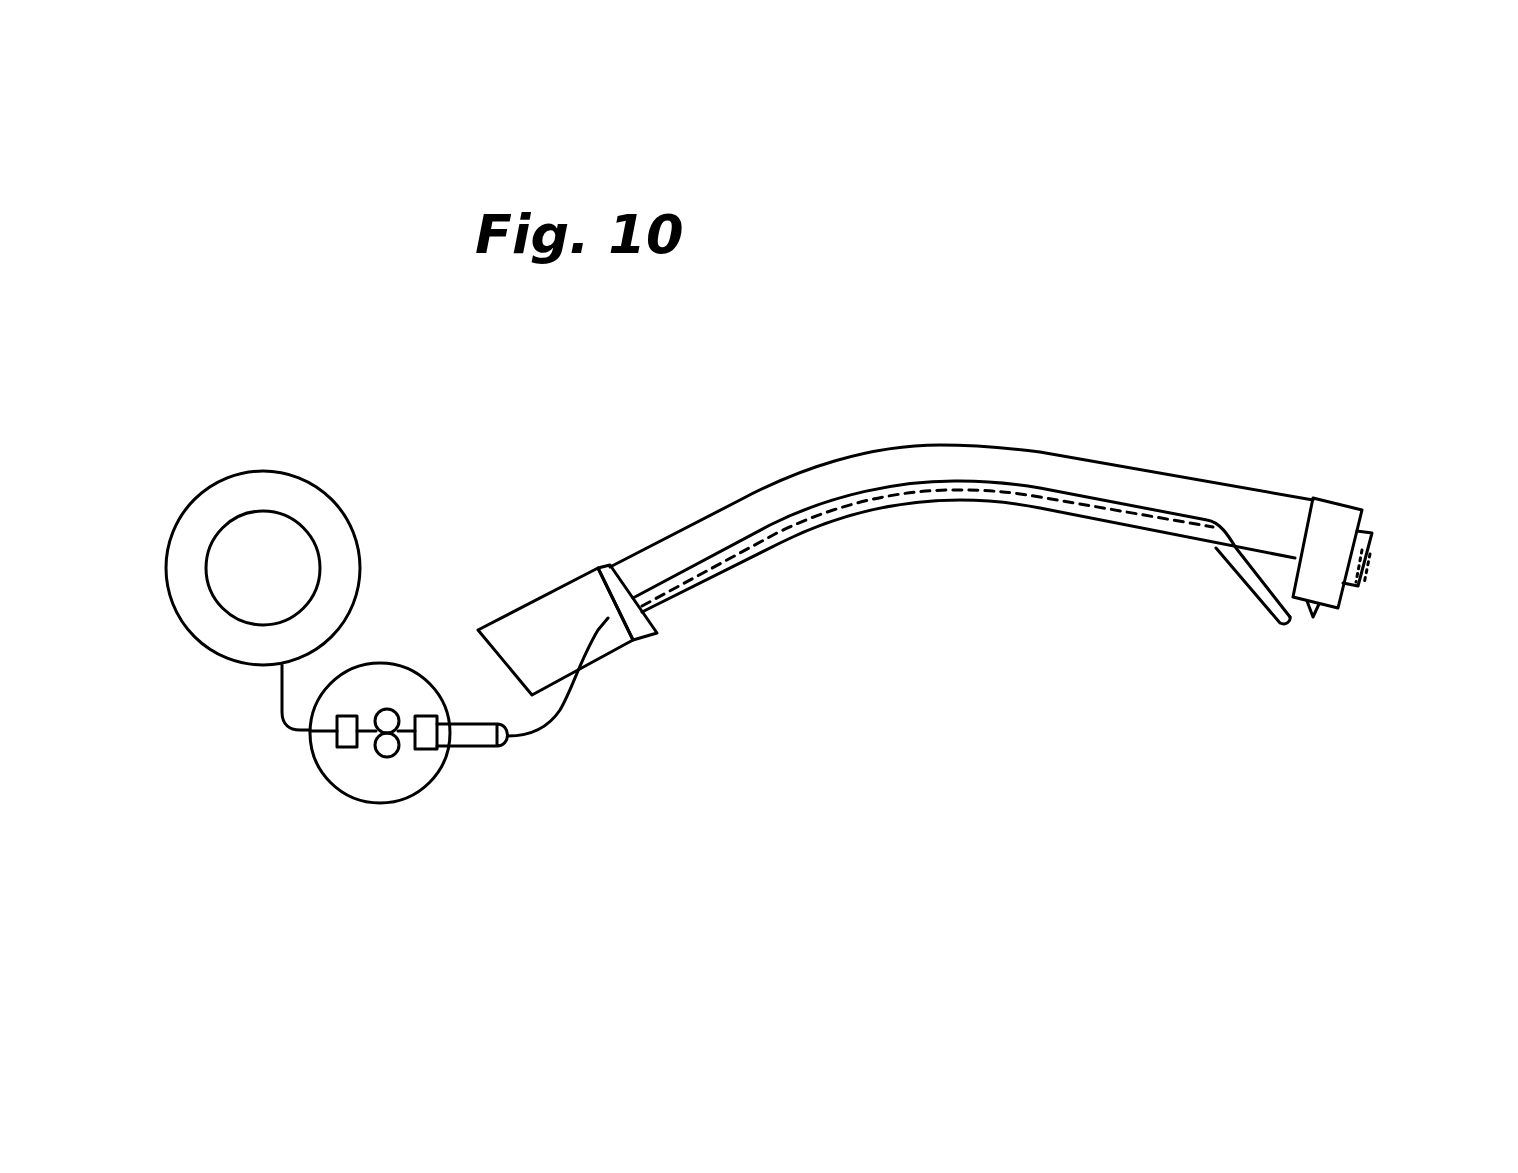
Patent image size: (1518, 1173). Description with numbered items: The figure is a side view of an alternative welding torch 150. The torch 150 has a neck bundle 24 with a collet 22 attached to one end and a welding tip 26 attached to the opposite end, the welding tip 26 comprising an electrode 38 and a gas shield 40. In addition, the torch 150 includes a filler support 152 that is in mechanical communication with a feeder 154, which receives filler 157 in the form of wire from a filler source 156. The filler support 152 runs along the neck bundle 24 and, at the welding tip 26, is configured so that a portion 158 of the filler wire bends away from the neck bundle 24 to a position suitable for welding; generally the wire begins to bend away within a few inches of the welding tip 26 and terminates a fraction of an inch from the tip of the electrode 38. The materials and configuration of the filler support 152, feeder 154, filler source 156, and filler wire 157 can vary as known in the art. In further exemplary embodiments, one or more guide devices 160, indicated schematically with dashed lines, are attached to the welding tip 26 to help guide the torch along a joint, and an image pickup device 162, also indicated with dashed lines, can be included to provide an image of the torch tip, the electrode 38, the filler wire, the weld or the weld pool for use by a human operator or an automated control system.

The torch 150 is at (948, 387).
The neck bundle 24 is at (1043, 450).
The welding tip 26 is at (1345, 495).
The collet 22 is at (528, 596).
The filler support 152 is at (933, 492).
The feeder 154 is at (410, 795).
The filler source 156 is at (333, 505).
The filler wire 157 is at (277, 716).
The portion of the filler wire 158 is at (1243, 592).
The guide device 160 is at (1370, 542).
The image pickup device 162 is at (1367, 573).
The gas shield 40 is at (1343, 590).
The electrode 38 is at (1318, 610).